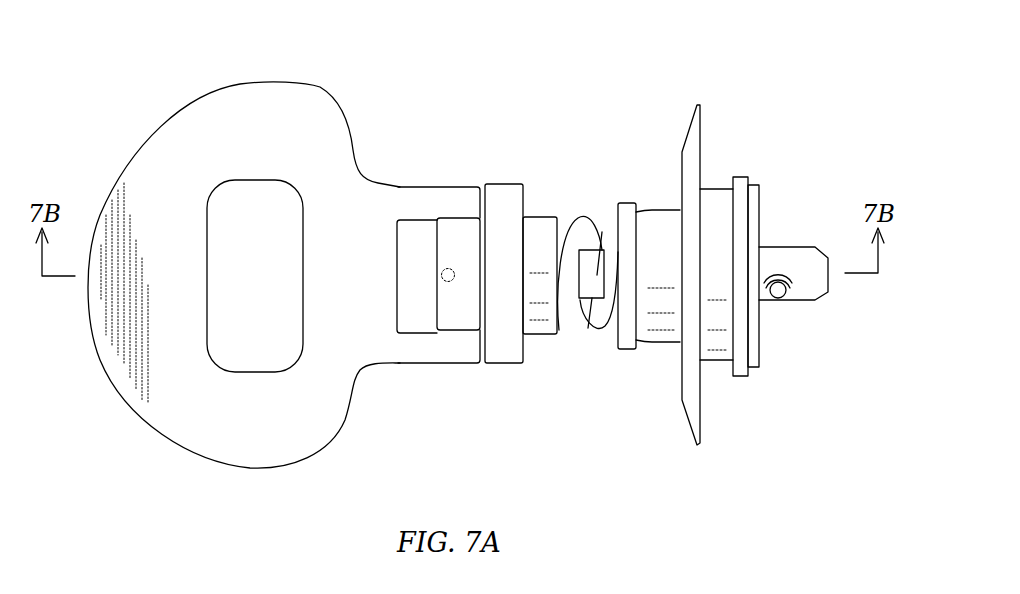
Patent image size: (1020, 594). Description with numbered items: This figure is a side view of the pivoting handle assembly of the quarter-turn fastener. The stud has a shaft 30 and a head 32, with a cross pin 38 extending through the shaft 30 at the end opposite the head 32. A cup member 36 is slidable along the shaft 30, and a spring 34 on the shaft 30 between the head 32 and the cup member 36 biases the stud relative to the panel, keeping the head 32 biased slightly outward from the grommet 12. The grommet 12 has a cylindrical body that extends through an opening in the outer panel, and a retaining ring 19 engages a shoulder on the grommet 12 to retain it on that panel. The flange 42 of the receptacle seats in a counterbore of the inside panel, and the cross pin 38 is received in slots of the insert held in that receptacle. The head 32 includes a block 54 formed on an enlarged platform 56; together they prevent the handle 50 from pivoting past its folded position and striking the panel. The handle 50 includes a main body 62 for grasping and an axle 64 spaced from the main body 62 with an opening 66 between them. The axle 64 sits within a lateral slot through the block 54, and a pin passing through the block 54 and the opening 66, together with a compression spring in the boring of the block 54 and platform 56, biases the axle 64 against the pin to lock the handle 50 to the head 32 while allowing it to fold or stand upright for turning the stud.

The grommet 12 is at (717, 149).
The retaining ring 19 is at (742, 378).
The shaft 30 is at (596, 262).
The head 32 is at (518, 378).
The spring 34 is at (596, 302).
The cup member 36 is at (618, 230).
The cross pin 38 is at (780, 298).
The flange 42 is at (690, 136).
The handle 50 is at (322, 64).
The block 54 is at (460, 308).
The platform 56 is at (508, 186).
The main body 62 is at (186, 444).
The axle 64 is at (469, 212).
The opening 66 is at (414, 297).